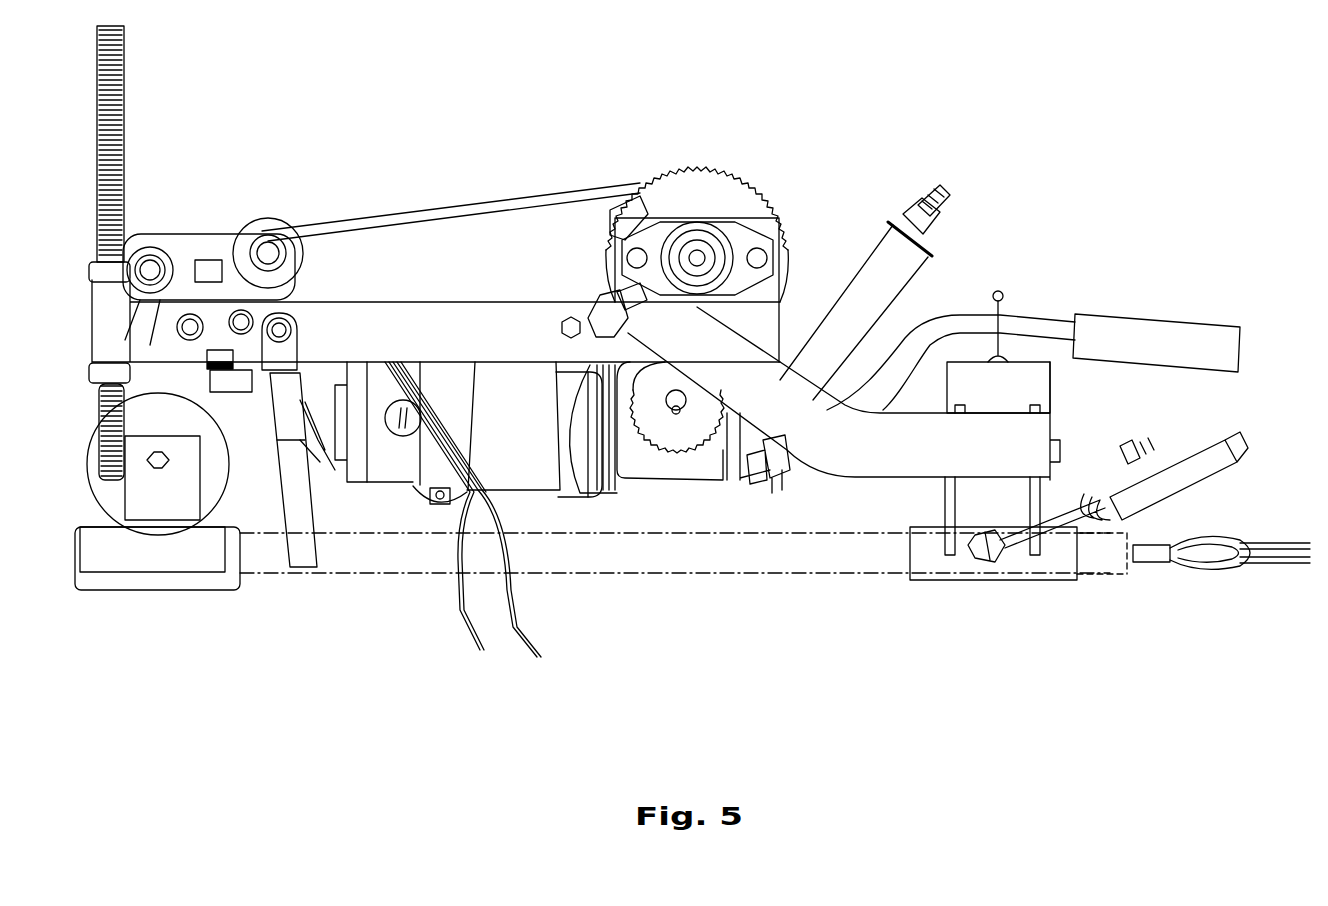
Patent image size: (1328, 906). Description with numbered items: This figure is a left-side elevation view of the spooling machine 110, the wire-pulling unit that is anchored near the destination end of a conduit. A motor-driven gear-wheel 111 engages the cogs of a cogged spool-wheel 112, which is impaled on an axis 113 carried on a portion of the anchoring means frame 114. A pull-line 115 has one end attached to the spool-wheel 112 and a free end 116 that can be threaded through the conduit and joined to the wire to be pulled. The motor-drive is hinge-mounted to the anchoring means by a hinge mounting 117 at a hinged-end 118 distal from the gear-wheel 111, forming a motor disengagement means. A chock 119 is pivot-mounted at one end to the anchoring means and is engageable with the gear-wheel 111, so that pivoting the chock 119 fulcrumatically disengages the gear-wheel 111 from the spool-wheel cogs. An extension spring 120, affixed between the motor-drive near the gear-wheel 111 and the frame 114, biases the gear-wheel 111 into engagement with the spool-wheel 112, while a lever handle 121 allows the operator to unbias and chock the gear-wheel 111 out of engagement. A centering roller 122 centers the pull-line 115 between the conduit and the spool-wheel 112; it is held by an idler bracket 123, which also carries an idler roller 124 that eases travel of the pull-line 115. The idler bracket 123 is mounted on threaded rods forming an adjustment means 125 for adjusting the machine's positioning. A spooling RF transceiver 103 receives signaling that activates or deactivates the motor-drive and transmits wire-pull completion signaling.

The spooling machine 110 is at (968, 120).
The spooling RF transceiver 103 is at (1020, 385).
The motor-driven gear-wheel 111 is at (670, 435).
The cogged spool-wheel 112 is at (710, 192).
The axis 113 is at (695, 255).
The anchoring means frame 114 is at (632, 232).
The pull-line 115 is at (427, 215).
The free end 116 is at (1212, 568).
The hinge mounting 117 is at (440, 497).
The hinged-end 118 is at (392, 460).
The chock 119 is at (592, 395).
The extension spring 120 is at (780, 470).
The lever handle 121 is at (1138, 335).
The centering roller 122 is at (258, 225).
The idler bracket 123 is at (130, 510).
The idler roller 124 is at (288, 500).
The adjustment means 125 is at (124, 88).